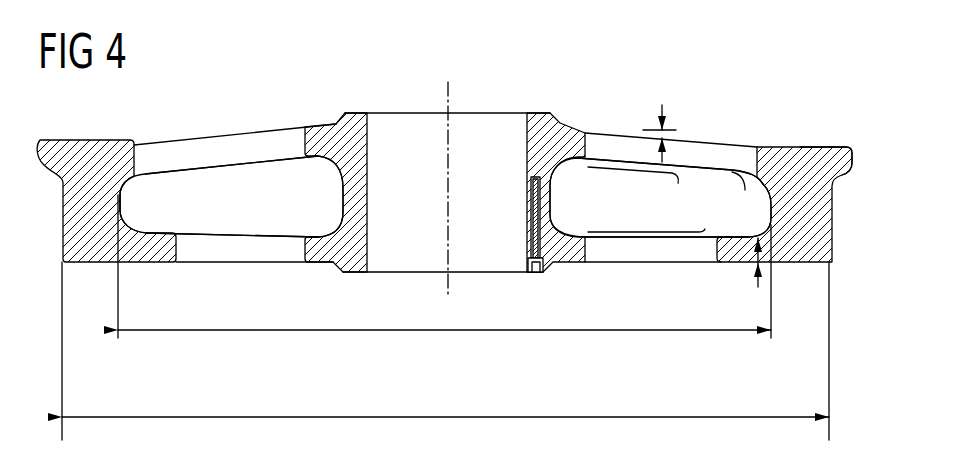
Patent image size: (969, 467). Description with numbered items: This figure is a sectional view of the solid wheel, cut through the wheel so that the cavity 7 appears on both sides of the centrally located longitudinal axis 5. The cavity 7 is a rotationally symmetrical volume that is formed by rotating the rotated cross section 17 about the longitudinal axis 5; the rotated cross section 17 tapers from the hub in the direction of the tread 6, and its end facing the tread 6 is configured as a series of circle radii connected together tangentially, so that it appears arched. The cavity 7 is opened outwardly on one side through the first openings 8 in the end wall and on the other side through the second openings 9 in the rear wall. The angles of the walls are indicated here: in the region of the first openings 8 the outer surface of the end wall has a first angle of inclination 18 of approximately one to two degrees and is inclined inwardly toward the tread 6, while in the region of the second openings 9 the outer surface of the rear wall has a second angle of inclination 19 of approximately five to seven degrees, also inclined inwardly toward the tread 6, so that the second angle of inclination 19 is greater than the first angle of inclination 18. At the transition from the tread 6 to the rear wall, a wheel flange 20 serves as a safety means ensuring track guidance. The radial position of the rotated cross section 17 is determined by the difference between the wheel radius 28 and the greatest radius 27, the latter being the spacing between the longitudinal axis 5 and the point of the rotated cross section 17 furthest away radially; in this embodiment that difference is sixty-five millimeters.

The longitudinal axis 5 is at (448, 95).
The tread 6 is at (834, 202).
The cavity 7 is at (212, 168).
The first openings 8 is at (277, 248).
The second openings 9 is at (275, 142).
The rotated cross section 17 is at (146, 186).
The first angle of inclination 18 is at (752, 265).
The second angle of inclination 19 is at (641, 131).
The wheel flange 20 is at (850, 158).
The greatest radius 27 is at (358, 331).
The wheel radius 28 is at (380, 417).